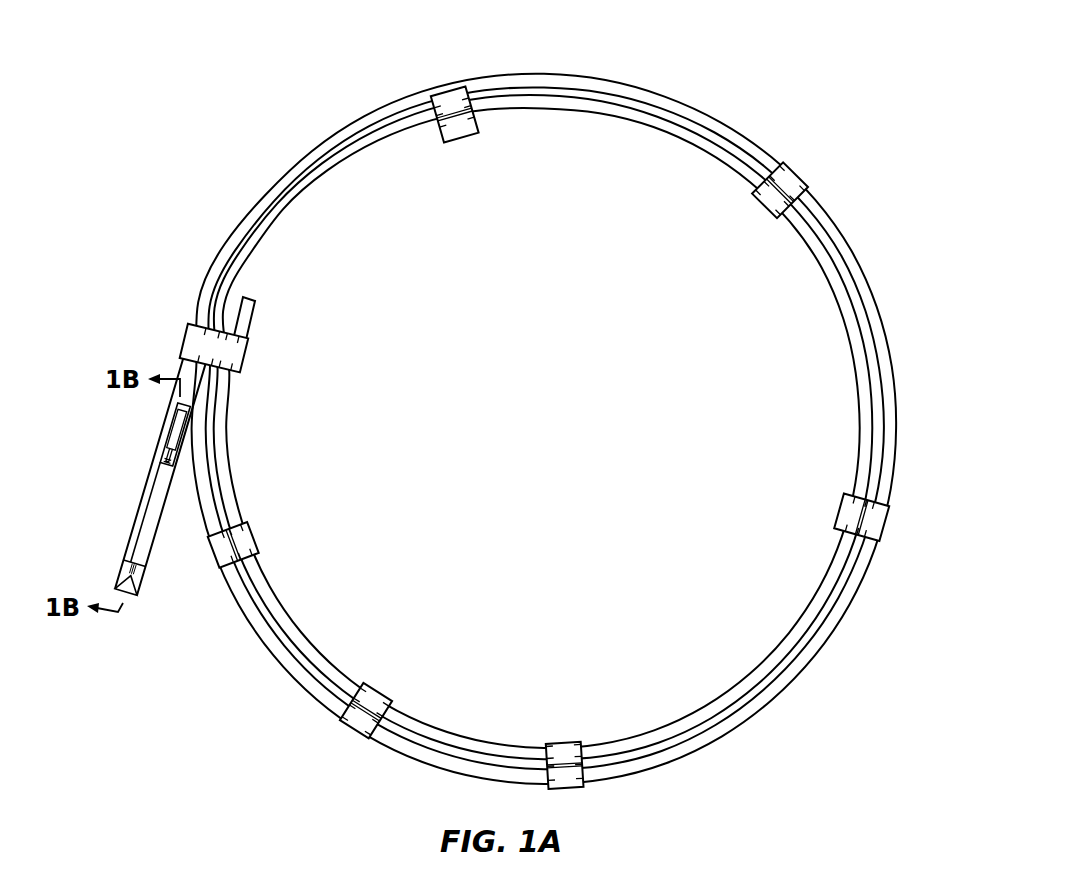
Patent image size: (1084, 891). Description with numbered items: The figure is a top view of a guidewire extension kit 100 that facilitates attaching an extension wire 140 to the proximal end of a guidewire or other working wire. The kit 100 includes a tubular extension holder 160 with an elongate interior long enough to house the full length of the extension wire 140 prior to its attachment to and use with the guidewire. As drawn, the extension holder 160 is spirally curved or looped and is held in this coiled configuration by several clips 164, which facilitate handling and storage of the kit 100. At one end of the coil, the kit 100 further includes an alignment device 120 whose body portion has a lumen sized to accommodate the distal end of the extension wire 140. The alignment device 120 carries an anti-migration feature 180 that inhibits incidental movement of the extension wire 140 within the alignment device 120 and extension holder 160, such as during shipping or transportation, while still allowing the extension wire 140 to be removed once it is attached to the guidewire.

The guidewire extension kit 100 is at (728, 50).
The alignment device 120 is at (133, 522).
The extension wire 140 is at (147, 510).
The extension holder 160 is at (553, 80).
The clips 164 is at (876, 522).
The anti-migration feature 180 is at (155, 462).